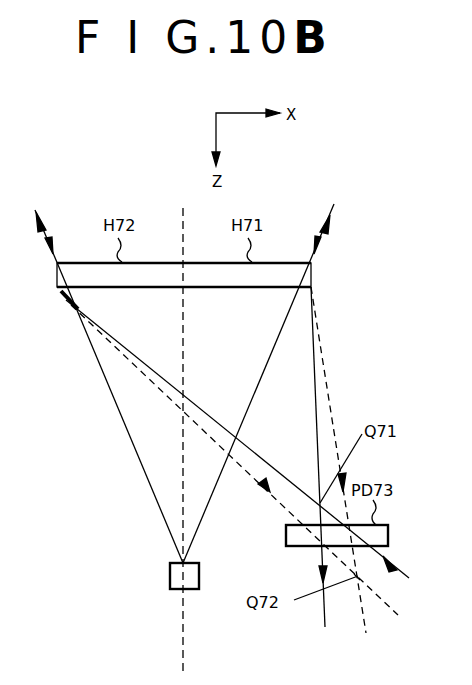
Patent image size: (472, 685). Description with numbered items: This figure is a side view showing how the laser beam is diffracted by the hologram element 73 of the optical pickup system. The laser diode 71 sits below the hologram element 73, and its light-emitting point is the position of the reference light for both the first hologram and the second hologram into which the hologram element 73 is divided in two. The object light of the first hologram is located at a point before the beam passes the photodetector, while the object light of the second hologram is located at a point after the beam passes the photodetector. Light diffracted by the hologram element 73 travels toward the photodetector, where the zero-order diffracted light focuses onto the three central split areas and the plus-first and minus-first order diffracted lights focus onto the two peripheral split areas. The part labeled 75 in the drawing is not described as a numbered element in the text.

The laser diode 71 is at (172, 578).
The hologram element 73 is at (91, 275).
The photodetector 75 is at (286, 534).